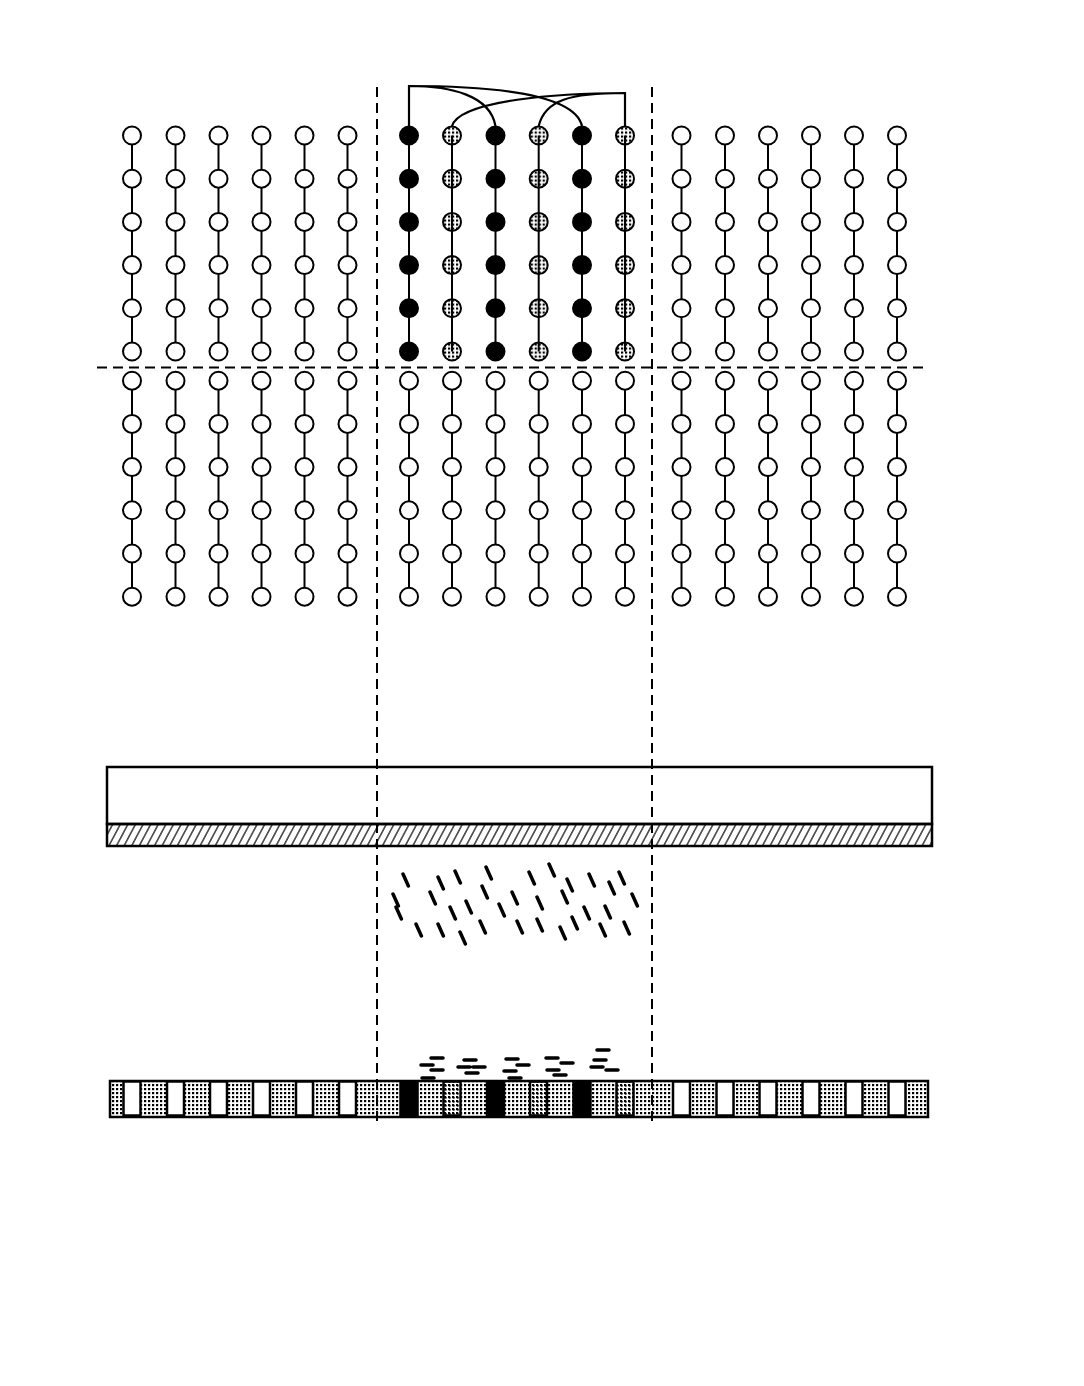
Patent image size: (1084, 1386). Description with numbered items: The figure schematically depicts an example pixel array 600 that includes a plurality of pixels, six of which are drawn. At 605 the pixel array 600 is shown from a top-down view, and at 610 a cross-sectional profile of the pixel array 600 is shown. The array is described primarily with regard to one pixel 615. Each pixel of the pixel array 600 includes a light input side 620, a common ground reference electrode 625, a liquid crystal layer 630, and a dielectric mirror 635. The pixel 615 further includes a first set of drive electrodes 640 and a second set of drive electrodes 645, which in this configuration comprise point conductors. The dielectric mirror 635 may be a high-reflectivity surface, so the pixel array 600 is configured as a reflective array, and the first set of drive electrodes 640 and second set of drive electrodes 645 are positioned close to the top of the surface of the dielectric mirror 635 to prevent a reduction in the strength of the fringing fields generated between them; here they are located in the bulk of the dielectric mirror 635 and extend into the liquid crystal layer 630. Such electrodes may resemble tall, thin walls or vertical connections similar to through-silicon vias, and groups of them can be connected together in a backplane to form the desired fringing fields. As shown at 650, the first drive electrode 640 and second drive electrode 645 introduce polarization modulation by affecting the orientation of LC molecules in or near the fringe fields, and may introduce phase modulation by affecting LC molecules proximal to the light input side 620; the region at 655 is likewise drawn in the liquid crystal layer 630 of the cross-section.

The pixel array 600 is at (863, 19).
The top-down view 605 is at (157, 80).
The cross-sectional profile 610 is at (143, 700).
The pixel 615 is at (536, 72).
The light input side 620 is at (908, 809).
The common ground reference electrode 625 is at (847, 848).
The liquid crystal layer 630 is at (849, 922).
The dielectric mirror 635 is at (828, 1118).
The first set of drive electrodes 640 is at (486, 94).
The second set of drive electrodes 645 is at (545, 98).
The polarization modulation region 650 is at (516, 1042).
The ejected particles 655 is at (513, 950).